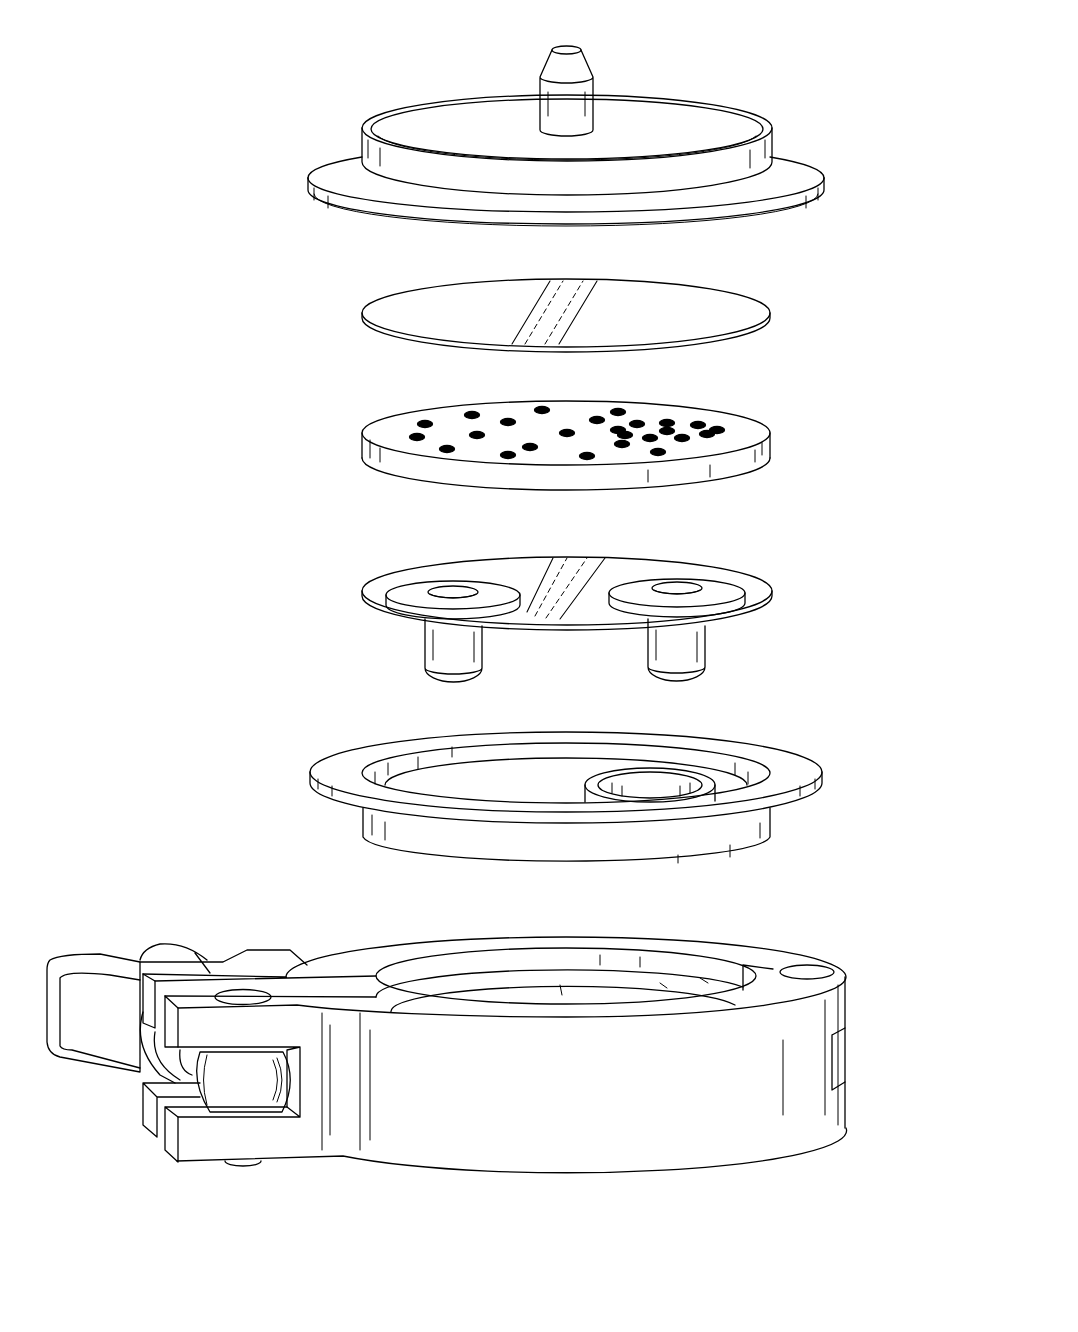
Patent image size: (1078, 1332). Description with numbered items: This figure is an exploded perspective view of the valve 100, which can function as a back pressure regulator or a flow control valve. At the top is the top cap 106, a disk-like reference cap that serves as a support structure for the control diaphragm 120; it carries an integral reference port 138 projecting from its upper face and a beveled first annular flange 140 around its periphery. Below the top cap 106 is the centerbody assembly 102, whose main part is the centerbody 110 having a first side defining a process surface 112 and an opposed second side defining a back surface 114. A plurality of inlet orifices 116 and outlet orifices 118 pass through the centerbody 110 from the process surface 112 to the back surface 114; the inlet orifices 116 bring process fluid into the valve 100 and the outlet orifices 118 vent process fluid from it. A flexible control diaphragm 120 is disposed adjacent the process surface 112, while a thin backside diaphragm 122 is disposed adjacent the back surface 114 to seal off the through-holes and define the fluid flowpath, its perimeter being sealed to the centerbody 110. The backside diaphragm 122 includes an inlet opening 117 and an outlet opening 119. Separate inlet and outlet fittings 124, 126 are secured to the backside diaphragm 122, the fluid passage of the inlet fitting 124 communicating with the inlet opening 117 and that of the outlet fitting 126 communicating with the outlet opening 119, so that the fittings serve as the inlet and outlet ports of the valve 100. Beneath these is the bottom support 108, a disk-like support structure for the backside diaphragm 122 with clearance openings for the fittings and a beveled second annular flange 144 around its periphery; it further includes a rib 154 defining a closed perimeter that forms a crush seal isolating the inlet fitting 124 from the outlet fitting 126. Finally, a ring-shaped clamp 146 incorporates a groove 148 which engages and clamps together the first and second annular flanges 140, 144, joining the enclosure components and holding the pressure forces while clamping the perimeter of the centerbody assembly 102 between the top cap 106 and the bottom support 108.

The valve 100 is at (870, 1120).
The centerbody assembly 102 is at (312, 626).
The top cap 106 is at (714, 118).
The bottom support 108 is at (745, 830).
The centerbody 110 is at (766, 452).
The process surface 112 is at (740, 416).
The back surface 114 is at (731, 475).
The inlet orifice 116 is at (668, 420).
The inlet opening 117 is at (676, 587).
The outlet orifice 118 is at (472, 412).
The outlet opening 119 is at (443, 590).
The control diaphragm 120 is at (733, 300).
The backside diaphragm 122 is at (758, 580).
The inlet fitting 124 is at (683, 642).
The outlet fitting 126 is at (428, 660).
The reference port 138 is at (568, 70).
The first annular flange 140 is at (353, 188).
The second annular flange 144 is at (318, 797).
The clamp 146 is at (437, 1170).
The groove 148 is at (633, 998).
The rib 154 is at (600, 796).